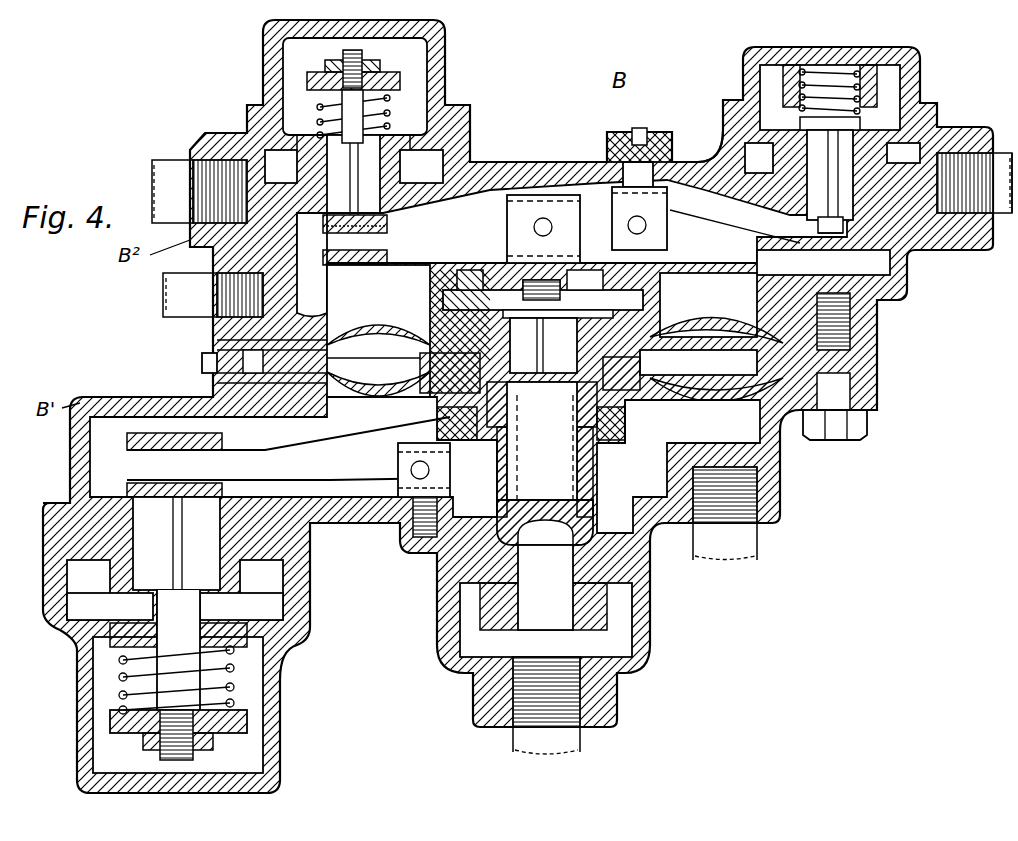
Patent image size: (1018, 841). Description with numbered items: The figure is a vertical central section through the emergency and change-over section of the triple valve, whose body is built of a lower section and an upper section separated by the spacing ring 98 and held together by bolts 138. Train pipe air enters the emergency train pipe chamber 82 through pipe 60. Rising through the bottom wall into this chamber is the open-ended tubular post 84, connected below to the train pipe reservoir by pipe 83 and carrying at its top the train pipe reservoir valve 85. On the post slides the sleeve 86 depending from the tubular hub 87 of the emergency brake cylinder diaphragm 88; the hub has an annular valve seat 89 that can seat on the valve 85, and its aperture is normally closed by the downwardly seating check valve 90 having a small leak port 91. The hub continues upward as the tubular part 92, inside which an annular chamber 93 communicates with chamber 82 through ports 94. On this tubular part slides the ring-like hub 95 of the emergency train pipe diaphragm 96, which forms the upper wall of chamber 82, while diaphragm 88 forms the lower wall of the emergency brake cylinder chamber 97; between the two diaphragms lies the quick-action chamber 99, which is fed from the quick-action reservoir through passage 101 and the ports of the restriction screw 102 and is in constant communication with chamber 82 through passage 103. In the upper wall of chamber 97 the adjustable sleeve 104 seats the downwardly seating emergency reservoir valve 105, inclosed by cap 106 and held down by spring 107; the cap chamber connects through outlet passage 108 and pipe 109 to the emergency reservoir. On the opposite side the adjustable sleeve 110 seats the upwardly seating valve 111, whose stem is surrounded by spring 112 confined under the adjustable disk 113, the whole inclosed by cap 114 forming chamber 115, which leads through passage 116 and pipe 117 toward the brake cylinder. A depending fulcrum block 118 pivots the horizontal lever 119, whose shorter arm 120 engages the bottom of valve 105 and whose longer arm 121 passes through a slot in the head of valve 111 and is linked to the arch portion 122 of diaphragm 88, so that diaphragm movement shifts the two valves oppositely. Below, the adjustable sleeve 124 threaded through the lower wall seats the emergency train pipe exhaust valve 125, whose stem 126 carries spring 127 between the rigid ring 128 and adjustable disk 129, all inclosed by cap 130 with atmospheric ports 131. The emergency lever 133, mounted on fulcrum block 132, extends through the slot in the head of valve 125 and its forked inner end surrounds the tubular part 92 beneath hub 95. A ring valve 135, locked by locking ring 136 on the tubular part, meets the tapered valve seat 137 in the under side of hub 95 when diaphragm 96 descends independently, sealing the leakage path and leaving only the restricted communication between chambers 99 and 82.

The pipe 60 is at (742, 558).
The emergency train pipe chamber 82 is at (518, 406).
The pipe 83 is at (580, 743).
The tubular post 84 is at (546, 601).
The train pipe reservoir valve 85 is at (565, 390).
The sleeve 86 is at (596, 512).
The tubular hub 87 is at (655, 315).
The emergency brake cylinder diaphragm 88 is at (395, 322).
The annular valve seat 89 is at (690, 335).
The check valve 90 is at (510, 308).
The leak port 91 is at (575, 310).
The tubular part 92 is at (495, 355).
The annular chamber 93 is at (505, 412).
The ports 94 is at (542, 472).
The ring-like hub 95 is at (382, 397).
The emergency train pipe diaphragm 96 is at (360, 405).
The emergency brake cylinder chamber 97 is at (693, 197).
The spacing ring 98 is at (873, 362).
The quick-action chamber 99 is at (698, 361).
The passage 101 is at (262, 335).
The restriction screw 102 is at (205, 363).
The passage 103 is at (262, 425).
The vertically adjustable sleeve 104 is at (863, 215).
The emergency reservoir valve 105 is at (935, 125).
The cap 106 is at (845, 152).
The spring 107 is at (862, 82).
The outlet passage 108 is at (956, 183).
The pipe 109 is at (1000, 228).
The vertically adjustable sleeve 110 is at (455, 150).
The valve 111 is at (330, 220).
The spring 112 is at (390, 110).
The vertically adjustable disk 113 is at (400, 75).
The cap 114 is at (268, 72).
The chamber 115 is at (290, 105).
The passage 116 is at (250, 187).
The pipe 117 is at (157, 175).
The fulcrum block 118 is at (667, 233).
The lever 119 is at (587, 210).
The shorter arm 120 is at (572, 221).
The longer arm 121 is at (485, 222).
The arch portion 122 is at (432, 278).
The adjustable sleeve 124 is at (105, 497).
The emergency train pipe exhaust valve 125 is at (176, 603).
The stem 126 is at (282, 690).
The spring 127 is at (215, 680).
The rigid ring 128 is at (120, 648).
The adjustable disk 129 is at (110, 722).
The cap 130 is at (55, 600).
The ports 131 is at (85, 770).
The fulcrum block 132 is at (390, 517).
The emergency lever 133 is at (288, 448).
The ring valve 135 is at (628, 420).
The locking ring 136 is at (462, 440).
The valve seat 137 is at (640, 398).
The bolts 138 is at (833, 398).